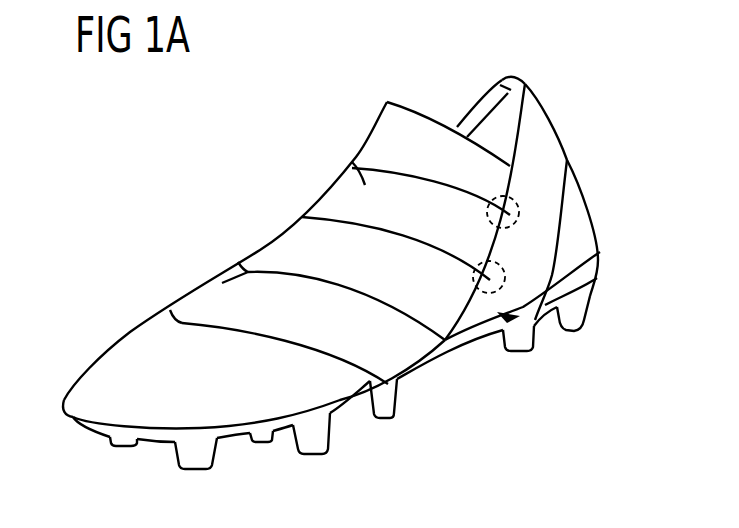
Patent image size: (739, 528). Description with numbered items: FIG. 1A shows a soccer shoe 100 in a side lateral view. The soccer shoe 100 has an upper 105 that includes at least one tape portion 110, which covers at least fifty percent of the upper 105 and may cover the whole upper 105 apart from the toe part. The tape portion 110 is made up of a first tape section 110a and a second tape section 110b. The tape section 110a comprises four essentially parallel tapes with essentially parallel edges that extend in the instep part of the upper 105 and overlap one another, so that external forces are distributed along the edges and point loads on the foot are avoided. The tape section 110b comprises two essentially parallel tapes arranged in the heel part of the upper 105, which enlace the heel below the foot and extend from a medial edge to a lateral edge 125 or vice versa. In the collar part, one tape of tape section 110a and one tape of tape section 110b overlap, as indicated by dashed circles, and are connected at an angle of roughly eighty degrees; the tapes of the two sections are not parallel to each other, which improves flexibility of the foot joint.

The soccer shoe 100 is at (223, 208).
The upper 105 is at (128, 362).
The tape portion 110 is at (318, 240).
The first tape section 110a is at (393, 150).
The second tape section 110b is at (545, 256).
The lateral edge 125 is at (533, 325).